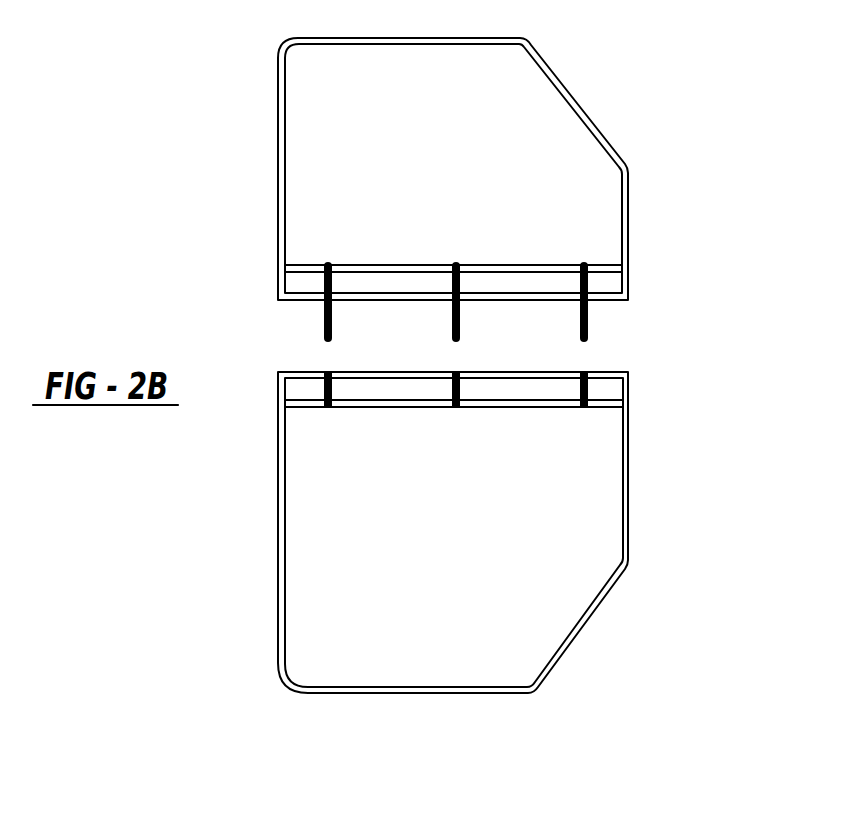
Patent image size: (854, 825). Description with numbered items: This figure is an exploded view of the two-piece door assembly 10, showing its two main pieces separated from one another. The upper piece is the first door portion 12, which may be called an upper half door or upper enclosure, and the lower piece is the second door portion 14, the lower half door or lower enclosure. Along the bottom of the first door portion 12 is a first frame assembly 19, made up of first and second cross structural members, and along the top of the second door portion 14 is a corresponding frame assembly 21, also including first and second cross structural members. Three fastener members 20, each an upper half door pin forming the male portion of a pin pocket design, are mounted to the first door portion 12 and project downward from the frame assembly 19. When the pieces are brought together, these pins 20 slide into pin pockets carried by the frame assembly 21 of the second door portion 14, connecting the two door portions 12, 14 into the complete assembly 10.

The two-piece door assembly 10 is at (204, 199).
The first door portion 12 is at (643, 118).
The second door portion 14 is at (667, 512).
The first frame assembly 19 is at (497, 312).
The fastener member 20 is at (322, 318).
The frame assembly 21 is at (532, 360).